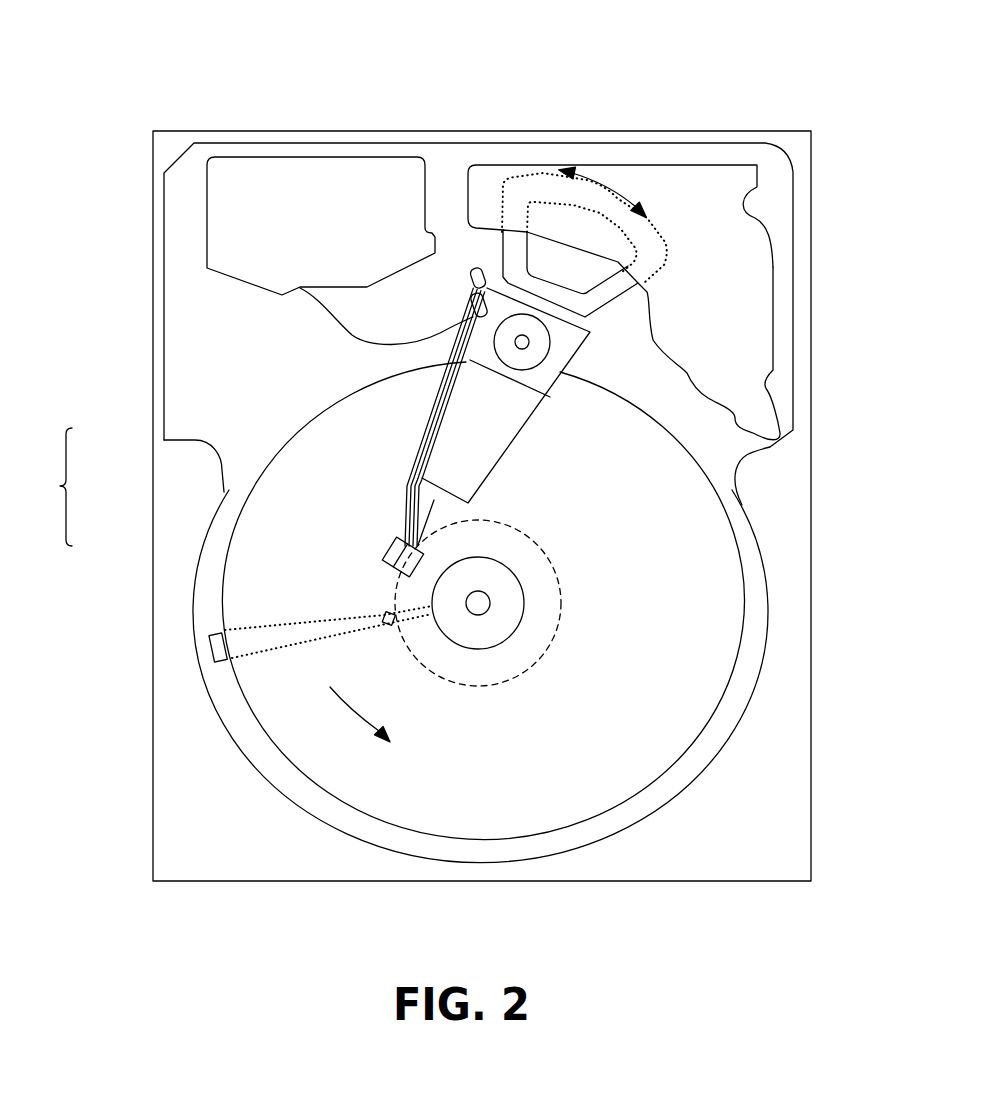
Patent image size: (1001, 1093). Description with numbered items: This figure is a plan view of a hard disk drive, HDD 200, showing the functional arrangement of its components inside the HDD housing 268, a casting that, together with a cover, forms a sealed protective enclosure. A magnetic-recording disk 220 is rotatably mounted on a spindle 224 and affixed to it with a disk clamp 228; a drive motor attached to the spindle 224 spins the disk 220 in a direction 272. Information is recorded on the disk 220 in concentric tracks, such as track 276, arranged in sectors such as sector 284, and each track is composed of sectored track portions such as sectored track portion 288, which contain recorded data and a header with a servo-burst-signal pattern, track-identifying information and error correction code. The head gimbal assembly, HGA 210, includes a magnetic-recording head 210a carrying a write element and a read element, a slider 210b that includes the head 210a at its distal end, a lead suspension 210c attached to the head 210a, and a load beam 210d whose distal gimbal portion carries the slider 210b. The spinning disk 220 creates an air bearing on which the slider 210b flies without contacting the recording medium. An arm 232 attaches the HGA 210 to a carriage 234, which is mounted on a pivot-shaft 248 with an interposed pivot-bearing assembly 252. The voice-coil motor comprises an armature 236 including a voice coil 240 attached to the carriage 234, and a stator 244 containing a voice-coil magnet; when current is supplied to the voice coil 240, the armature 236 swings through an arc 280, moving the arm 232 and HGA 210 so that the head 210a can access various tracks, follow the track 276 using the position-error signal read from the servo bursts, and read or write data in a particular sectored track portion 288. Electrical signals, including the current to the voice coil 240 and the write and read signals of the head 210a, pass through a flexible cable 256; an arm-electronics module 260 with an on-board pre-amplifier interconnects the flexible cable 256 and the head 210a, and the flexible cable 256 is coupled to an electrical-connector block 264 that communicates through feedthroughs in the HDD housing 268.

The hard disk drive (HDD) 200 is at (118, 67).
The head gimbal assembly (HGA) 210 is at (248, 432).
The magnetic-recording head 210a is at (397, 545).
The slider 210b is at (413, 532).
The lead suspension 210c is at (432, 505).
The load beam 210d is at (407, 487).
The magnetic-recording disk 220 is at (667, 558).
The spindle 224 is at (484, 603).
The disk clamp 228 is at (507, 621).
The arm 232 is at (473, 448).
The carriage 234 is at (545, 395).
The armature 236 is at (486, 292).
The voice coil 240 is at (515, 240).
The stator 244 is at (737, 250).
The pivot-shaft 248 is at (530, 342).
The pivot-bearing assembly 252 is at (536, 352).
The flexible cable 256 is at (335, 317).
The arm-electronics (AE) module 260 is at (473, 313).
The electrical-connector block 264 is at (233, 225).
The HDD housing 268 is at (790, 144).
The direction 272 is at (368, 718).
The track 276 is at (560, 568).
The arc 280 is at (602, 180).
The sector 284 is at (207, 648).
The sectored track portion 288 is at (385, 618).